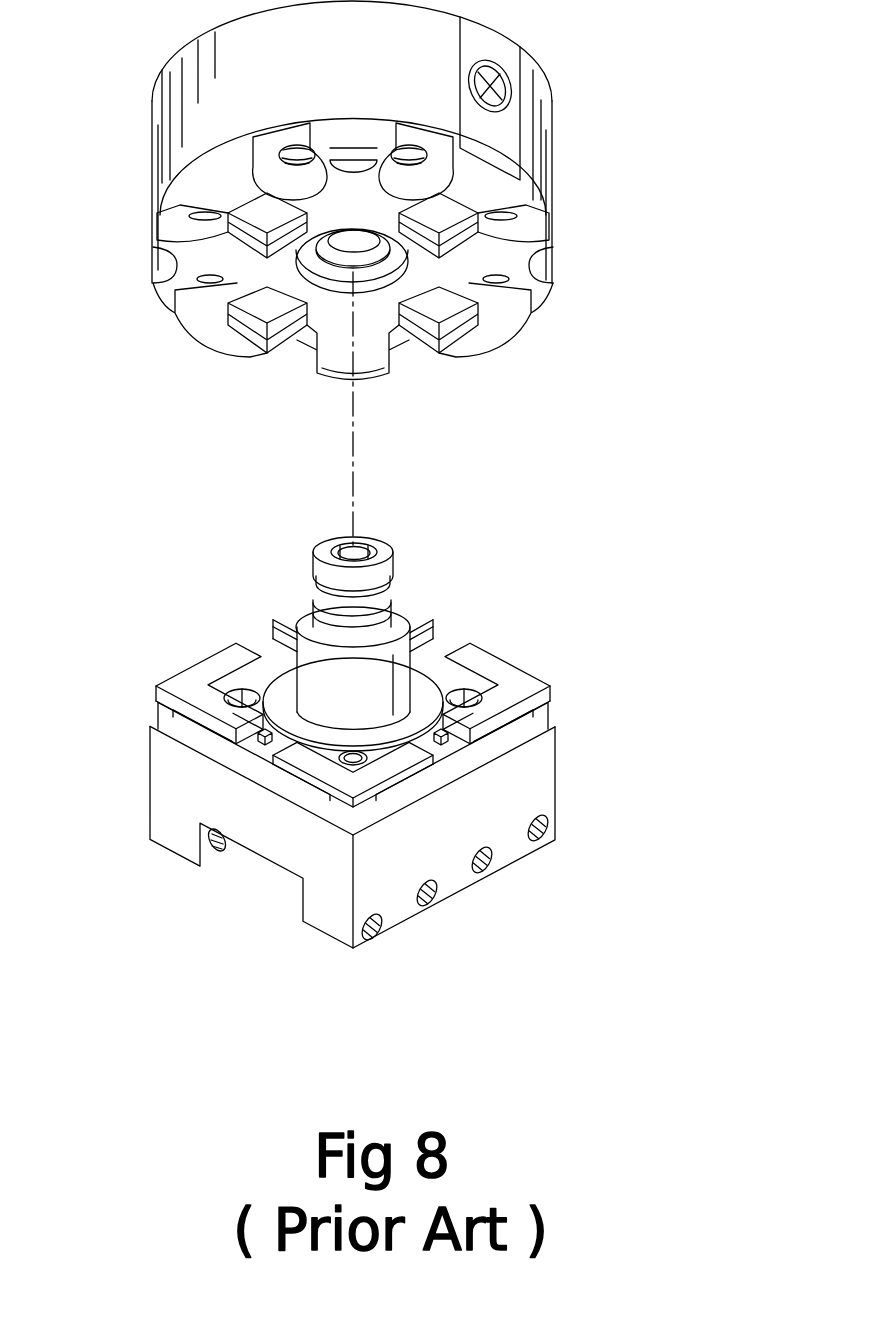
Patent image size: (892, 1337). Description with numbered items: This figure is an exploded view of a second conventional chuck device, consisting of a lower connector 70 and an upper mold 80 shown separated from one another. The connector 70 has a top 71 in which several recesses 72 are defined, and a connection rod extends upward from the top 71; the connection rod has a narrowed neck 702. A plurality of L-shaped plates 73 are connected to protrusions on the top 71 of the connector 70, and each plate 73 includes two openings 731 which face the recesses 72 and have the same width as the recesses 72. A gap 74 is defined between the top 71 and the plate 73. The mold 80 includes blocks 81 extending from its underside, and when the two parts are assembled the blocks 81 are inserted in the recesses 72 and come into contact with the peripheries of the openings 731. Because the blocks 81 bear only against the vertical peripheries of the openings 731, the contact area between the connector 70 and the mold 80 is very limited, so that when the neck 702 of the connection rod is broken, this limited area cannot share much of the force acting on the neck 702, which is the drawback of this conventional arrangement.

The connector 70 is at (412, 668).
The neck 702 is at (370, 601).
The top 71 is at (295, 797).
The recess 72 is at (246, 752).
The L-shaped plate 73 is at (178, 681).
The opening 731 is at (229, 692).
The gap 74 is at (195, 723).
The mold 80 is at (542, 370).
The block 81 is at (263, 333).